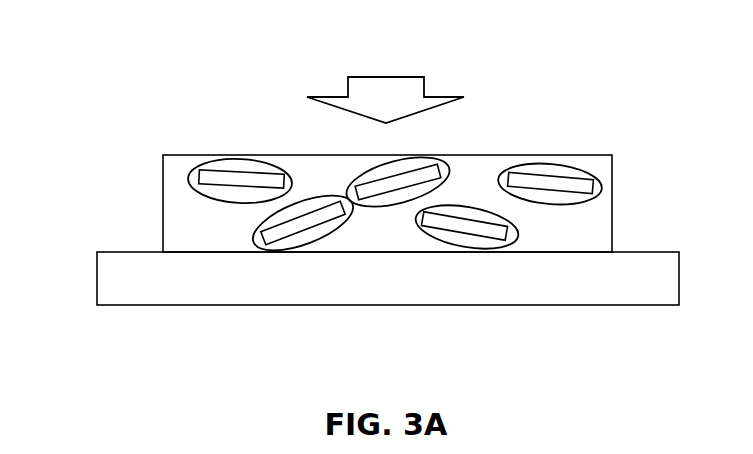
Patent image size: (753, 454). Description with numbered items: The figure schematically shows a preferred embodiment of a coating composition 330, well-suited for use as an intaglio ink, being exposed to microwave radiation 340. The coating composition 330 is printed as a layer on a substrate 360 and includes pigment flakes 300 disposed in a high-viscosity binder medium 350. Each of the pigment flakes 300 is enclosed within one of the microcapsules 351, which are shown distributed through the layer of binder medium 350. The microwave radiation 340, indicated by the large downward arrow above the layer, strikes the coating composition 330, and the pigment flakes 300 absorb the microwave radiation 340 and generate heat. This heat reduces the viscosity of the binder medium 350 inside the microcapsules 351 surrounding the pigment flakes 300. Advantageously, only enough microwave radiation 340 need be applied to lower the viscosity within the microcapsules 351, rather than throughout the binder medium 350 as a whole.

The pigment flakes 300 is at (552, 175).
The coating composition 330 is at (383, 181).
The microwave radiation 340 is at (388, 77).
The binder medium 350 is at (163, 203).
The microcapsules 351 is at (602, 187).
The substrate 360 is at (97, 278).